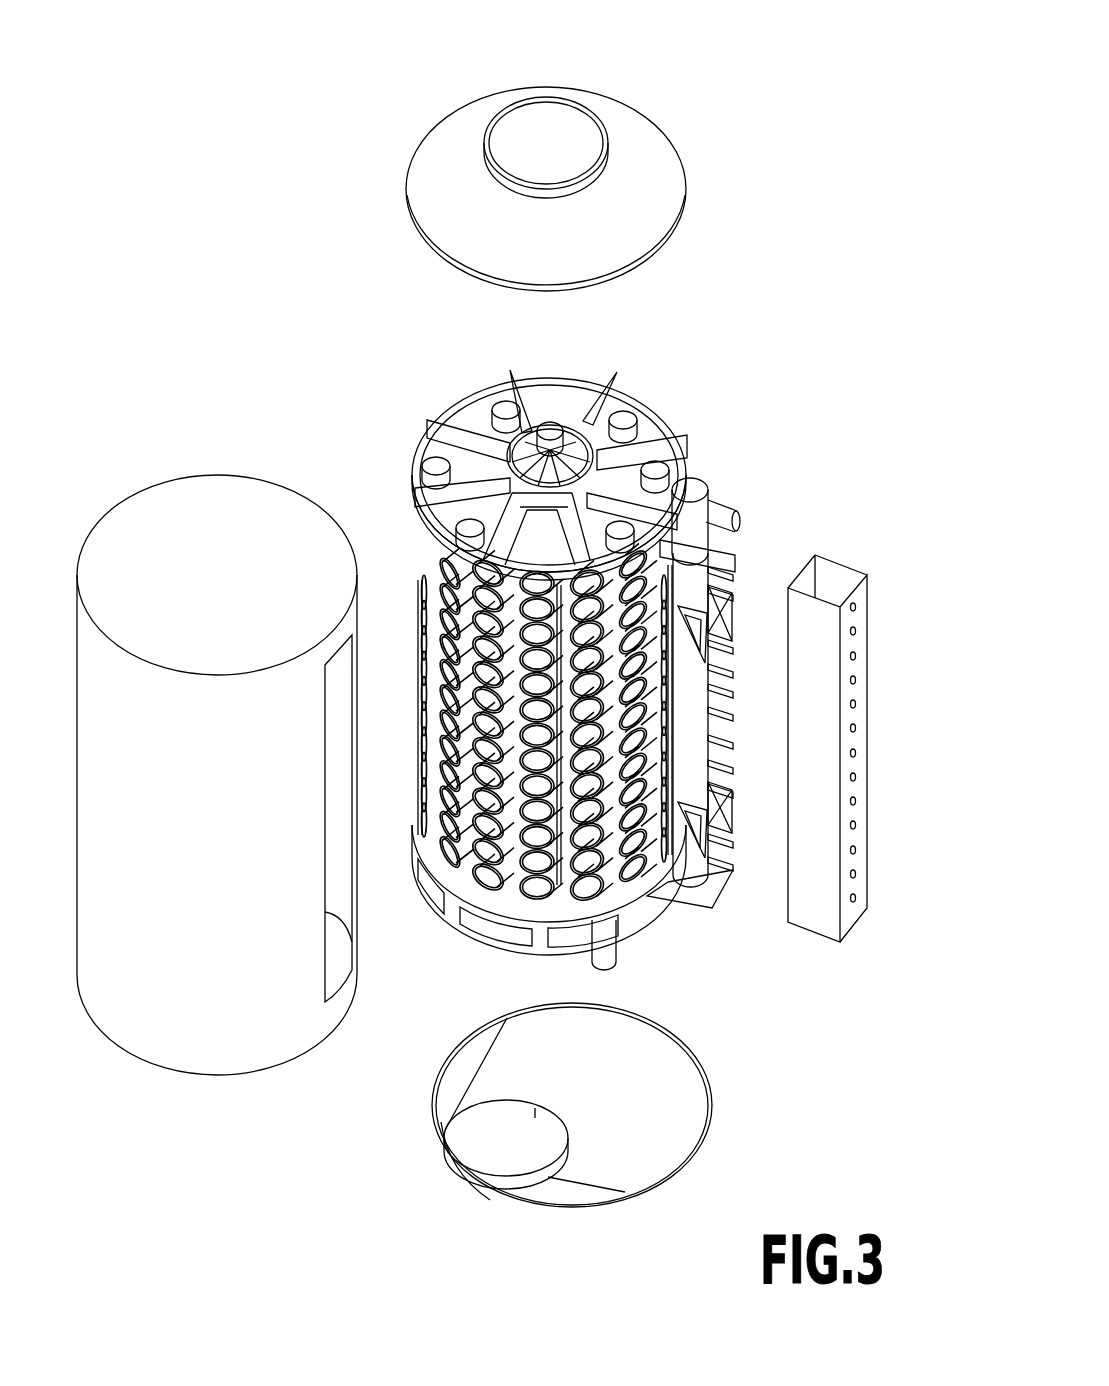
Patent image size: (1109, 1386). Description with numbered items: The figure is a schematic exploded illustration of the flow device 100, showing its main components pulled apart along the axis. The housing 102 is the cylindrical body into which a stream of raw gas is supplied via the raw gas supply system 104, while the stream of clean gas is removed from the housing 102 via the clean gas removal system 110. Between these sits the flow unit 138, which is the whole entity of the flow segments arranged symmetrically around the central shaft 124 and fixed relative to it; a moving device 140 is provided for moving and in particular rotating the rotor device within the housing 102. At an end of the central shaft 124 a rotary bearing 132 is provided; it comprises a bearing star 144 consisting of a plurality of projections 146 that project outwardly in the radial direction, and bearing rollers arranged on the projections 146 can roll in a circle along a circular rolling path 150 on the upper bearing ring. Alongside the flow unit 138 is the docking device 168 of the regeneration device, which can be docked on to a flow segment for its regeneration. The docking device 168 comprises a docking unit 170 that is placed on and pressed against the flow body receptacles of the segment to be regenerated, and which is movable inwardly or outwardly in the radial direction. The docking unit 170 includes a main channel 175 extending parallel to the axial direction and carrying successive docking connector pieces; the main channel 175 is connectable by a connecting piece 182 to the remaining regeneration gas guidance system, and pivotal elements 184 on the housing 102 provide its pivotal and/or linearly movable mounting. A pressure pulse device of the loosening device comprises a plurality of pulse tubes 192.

The flow device 100 is at (268, 210).
The housing 102 is at (137, 512).
The raw gas supply system 104 is at (480, 1192).
The clean gas removal system 110 is at (575, 112).
The central shaft 124 is at (524, 440).
The rotary bearing 132 is at (590, 425).
The flow unit 138 is at (408, 540).
The moving device 140 is at (488, 449).
The bearing star 144 is at (517, 442).
The projections 146 is at (510, 437).
The circular rolling path 150 is at (680, 462).
The docking device 168 is at (830, 966).
The docking unit 170 is at (879, 678).
The main channel 175 is at (695, 588).
The connecting piece 182 is at (717, 520).
The pivotal elements 184 is at (725, 858).
The pulse tubes 192 is at (730, 672).